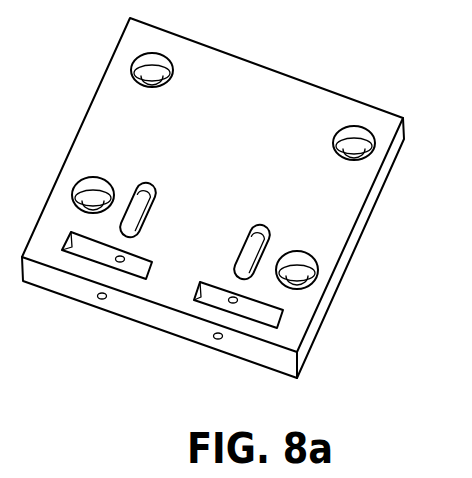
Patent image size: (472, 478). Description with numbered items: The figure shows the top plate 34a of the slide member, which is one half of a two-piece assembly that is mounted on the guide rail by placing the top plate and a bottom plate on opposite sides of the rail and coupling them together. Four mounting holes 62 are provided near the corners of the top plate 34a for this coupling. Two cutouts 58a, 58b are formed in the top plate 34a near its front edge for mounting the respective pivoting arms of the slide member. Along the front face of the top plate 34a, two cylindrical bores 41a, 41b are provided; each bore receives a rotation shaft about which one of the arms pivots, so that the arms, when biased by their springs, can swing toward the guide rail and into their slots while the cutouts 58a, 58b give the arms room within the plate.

The top plate 34a is at (377, 209).
The mounting holes 62 is at (133, 63).
The cutout 58a is at (84, 249).
The cutout 58b is at (259, 314).
The cylindrical bore 41a is at (102, 300).
The cylindrical bore 41b is at (219, 340).